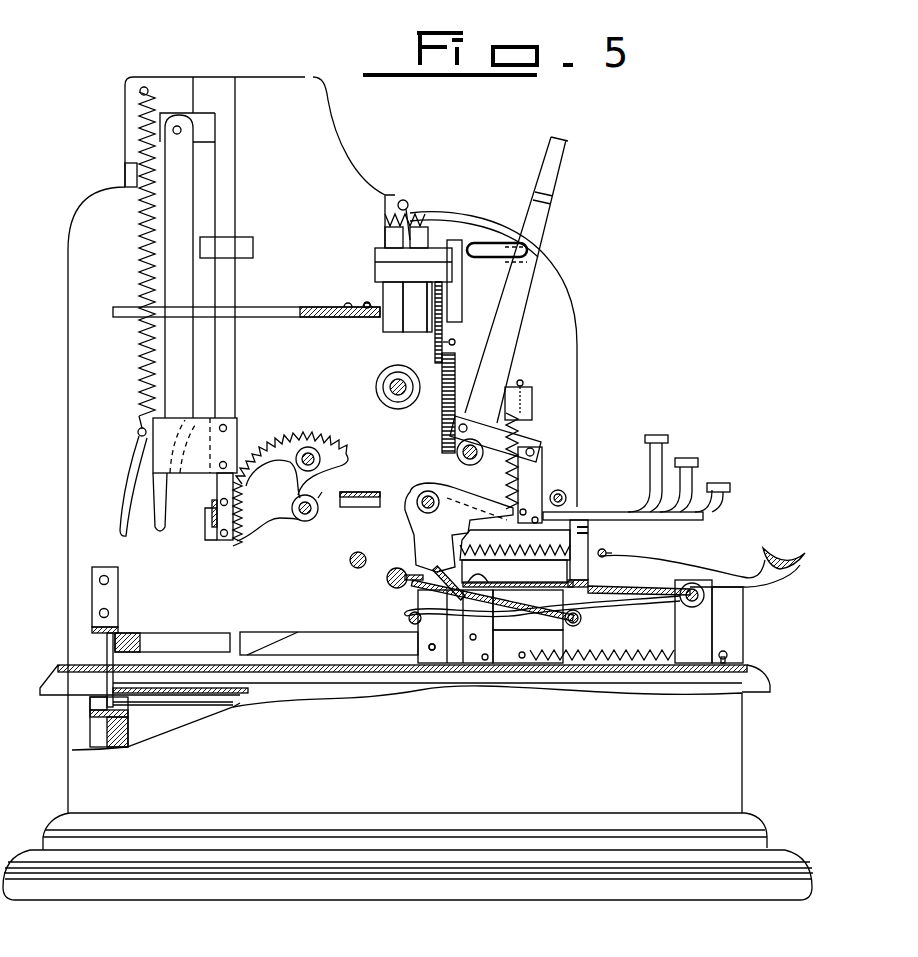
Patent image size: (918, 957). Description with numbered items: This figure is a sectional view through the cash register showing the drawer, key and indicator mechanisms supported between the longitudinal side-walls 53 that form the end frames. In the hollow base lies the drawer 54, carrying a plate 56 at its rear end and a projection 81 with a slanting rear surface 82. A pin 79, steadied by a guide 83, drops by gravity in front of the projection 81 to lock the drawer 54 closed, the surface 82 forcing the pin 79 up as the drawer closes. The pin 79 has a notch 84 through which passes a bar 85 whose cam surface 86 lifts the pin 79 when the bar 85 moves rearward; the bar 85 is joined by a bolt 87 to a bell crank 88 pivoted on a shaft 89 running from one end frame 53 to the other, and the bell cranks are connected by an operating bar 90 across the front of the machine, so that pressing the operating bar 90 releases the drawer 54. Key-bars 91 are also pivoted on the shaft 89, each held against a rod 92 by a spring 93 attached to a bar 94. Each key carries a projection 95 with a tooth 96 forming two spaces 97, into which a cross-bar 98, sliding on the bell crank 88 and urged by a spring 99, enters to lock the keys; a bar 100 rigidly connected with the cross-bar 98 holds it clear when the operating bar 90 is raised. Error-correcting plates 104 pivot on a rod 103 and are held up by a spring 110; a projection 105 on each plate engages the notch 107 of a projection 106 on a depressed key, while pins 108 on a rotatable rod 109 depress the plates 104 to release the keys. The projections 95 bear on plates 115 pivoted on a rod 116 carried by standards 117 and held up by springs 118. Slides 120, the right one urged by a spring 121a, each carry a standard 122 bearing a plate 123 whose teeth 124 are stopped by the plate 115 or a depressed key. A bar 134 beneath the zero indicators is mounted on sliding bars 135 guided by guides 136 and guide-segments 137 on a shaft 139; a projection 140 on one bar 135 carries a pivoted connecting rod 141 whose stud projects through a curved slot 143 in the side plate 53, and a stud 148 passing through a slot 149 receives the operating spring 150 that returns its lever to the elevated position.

The side-wall 53 is at (560, 368).
The drawer 54 is at (128, 735).
The plate 56 is at (205, 706).
The pin 79 is at (107, 653).
The projection 81 is at (88, 718).
The slanting surface 82 is at (90, 703).
The guide 83 is at (97, 588).
The notch 84 is at (113, 663).
The bar 85 is at (233, 665).
The cam surface 86 is at (130, 660).
The bolt 87 is at (433, 652).
The bell crank 88 is at (430, 598).
The shaft 89 is at (423, 494).
The operating bar 90 is at (772, 550).
The key-bar 91 is at (645, 508).
The rod 92 is at (558, 490).
The spring 93 is at (514, 427).
The bar 94 is at (520, 383).
The projection 95 is at (602, 557).
The tooth 96 is at (588, 533).
The space 97 is at (583, 527).
The cross-bar 98 is at (606, 551).
The spring 99 is at (473, 528).
The bar 100 is at (524, 586).
The rod 103 is at (583, 616).
The plate 104 is at (522, 646).
The projection 105 is at (418, 558).
The projection 106 is at (412, 527).
The notch 107 is at (437, 547).
The pin 108 is at (411, 567).
The rotatable rod 109 is at (386, 578).
The spring 110 is at (457, 652).
The plate 115 is at (652, 587).
The rod 116 is at (692, 607).
The standard 117 is at (712, 627).
The spring 118 is at (652, 601).
The slide 120 is at (268, 648).
The spring 121a is at (632, 665).
The standard 122 is at (480, 622).
The plate 123 is at (480, 590).
The tooth 124 is at (530, 595).
The bar 134 is at (213, 503).
The sliding bar 135 is at (223, 380).
The guide 136 is at (242, 248).
The guide-segment 137 is at (278, 463).
The shaft 139 is at (305, 512).
The projection 140 is at (203, 128).
The connecting rod 141 is at (173, 352).
The curved slot 143 is at (162, 530).
The stud 148 is at (138, 432).
The slot 149 is at (121, 510).
The operating spring 150 is at (140, 282).